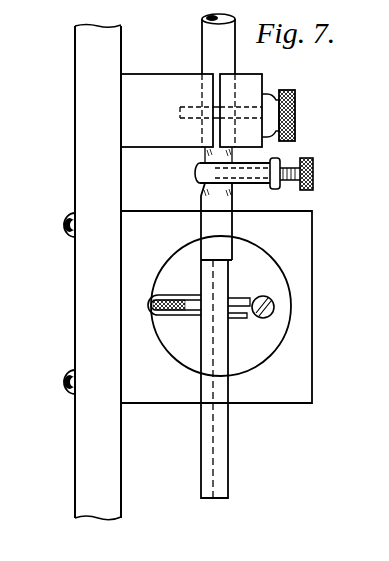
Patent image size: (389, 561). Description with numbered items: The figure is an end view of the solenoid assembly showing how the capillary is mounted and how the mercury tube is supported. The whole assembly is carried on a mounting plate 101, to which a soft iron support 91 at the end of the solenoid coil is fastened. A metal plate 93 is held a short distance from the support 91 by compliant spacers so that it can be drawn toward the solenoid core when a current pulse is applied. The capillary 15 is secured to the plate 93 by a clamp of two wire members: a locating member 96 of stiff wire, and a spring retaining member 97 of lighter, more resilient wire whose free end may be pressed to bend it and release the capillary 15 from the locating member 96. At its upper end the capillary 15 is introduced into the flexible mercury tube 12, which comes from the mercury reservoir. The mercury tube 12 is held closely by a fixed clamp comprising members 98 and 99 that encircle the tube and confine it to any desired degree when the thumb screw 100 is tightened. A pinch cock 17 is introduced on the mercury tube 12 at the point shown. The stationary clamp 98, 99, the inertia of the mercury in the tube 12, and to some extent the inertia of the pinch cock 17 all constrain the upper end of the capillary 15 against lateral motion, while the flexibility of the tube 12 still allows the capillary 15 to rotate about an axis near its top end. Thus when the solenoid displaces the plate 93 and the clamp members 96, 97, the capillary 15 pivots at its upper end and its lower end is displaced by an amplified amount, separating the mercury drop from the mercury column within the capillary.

The mounting plate 101 is at (75, 68).
The mercury tube 12 is at (202, 33).
The clamp member 98 is at (140, 79).
The clamp member 99 is at (252, 82).
The thumb screw 100 is at (296, 112).
The pinch cock 17 is at (315, 172).
The capillary 15 is at (235, 199).
The soft iron support 91 is at (303, 343).
The metal plate 93 is at (273, 278).
The locating member 96 is at (241, 299).
The spring retaining member 97 is at (166, 297).